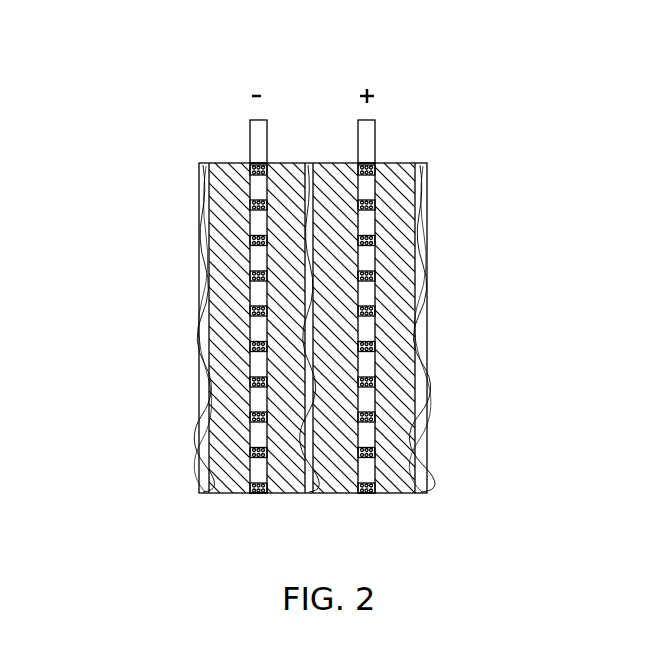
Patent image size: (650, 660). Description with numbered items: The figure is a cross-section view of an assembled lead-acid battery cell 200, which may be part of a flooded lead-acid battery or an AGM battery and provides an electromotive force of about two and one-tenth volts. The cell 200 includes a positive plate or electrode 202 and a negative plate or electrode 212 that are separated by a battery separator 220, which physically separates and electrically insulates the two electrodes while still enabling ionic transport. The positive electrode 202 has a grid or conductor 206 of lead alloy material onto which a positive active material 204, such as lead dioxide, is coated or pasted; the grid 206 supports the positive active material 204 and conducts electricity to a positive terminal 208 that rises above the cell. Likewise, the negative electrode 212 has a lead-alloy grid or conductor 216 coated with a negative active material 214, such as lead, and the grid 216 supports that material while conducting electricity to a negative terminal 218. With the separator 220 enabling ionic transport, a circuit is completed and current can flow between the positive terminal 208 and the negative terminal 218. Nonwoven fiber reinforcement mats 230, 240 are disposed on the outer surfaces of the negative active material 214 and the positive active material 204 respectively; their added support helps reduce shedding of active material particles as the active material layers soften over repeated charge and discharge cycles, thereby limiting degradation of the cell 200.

The lead-acid battery cell 200 is at (126, 190).
The positive electrode 202 is at (433, 101).
The positive active material 204 is at (381, 493).
The grid 206 is at (375, 347).
The positive terminal 208 is at (375, 145).
The negative electrode 212 is at (224, 111).
The negative active material 214 is at (283, 493).
The grid 216 is at (250, 312).
The negative terminal 218 is at (250, 143).
The battery separator 220 is at (310, 178).
The nonwoven fiber reinforcement mat 230 is at (200, 400).
The nonwoven fiber reinforcement mat 240 is at (417, 428).